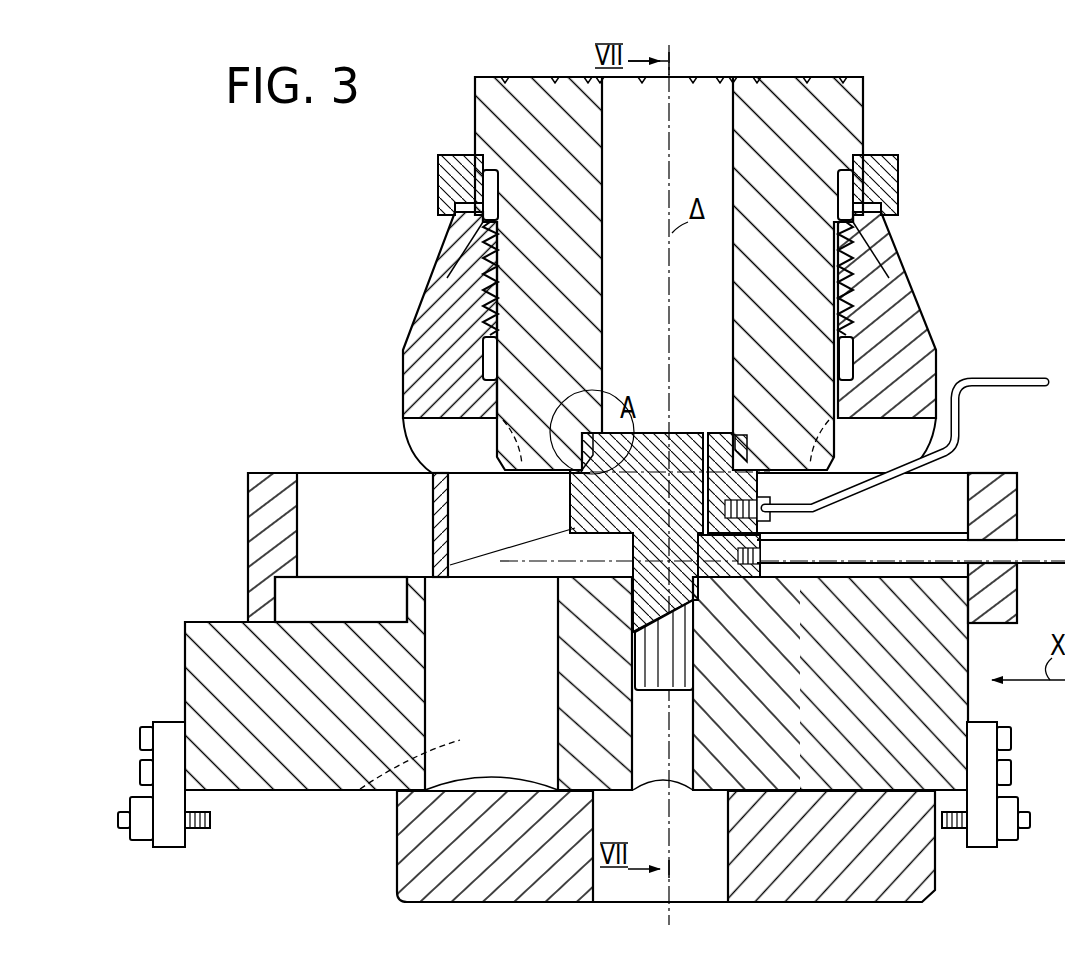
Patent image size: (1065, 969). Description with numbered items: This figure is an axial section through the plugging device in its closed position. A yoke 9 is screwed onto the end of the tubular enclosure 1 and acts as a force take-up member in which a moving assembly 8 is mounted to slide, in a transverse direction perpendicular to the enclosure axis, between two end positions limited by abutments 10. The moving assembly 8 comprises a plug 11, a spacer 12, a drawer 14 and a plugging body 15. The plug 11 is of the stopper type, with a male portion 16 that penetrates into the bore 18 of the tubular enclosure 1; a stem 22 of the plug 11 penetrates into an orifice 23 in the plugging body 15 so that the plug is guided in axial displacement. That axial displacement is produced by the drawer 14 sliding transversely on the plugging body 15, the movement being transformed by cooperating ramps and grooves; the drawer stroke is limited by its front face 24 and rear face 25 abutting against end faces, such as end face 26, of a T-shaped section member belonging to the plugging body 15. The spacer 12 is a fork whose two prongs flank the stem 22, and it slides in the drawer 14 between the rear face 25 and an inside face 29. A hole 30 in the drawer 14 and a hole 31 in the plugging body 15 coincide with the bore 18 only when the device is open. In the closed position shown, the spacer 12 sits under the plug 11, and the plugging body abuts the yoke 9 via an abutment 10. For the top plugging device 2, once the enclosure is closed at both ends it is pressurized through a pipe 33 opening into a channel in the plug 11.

The tubular enclosure 1 is at (512, 113).
The top plugging device 2 is at (380, 360).
The moving assembly 8 is at (203, 546).
The yoke 9 is at (440, 327).
The abutments 10 is at (170, 832).
The plug 11 is at (580, 520).
The spacer 12 is at (728, 577).
The drawer 14 is at (246, 490).
The plugging body 15 is at (223, 655).
The male portion 16 is at (683, 430).
The bore 18 is at (705, 118).
The stem 22 is at (652, 662).
The orifice 23 is at (676, 770).
The front face 24 is at (281, 600).
The rear face 25 is at (972, 495).
The end face 26 is at (408, 595).
The inside face 29 is at (450, 513).
The hole 30 is at (313, 490).
The hole 31 is at (455, 740).
The pipe 33 is at (1000, 378).